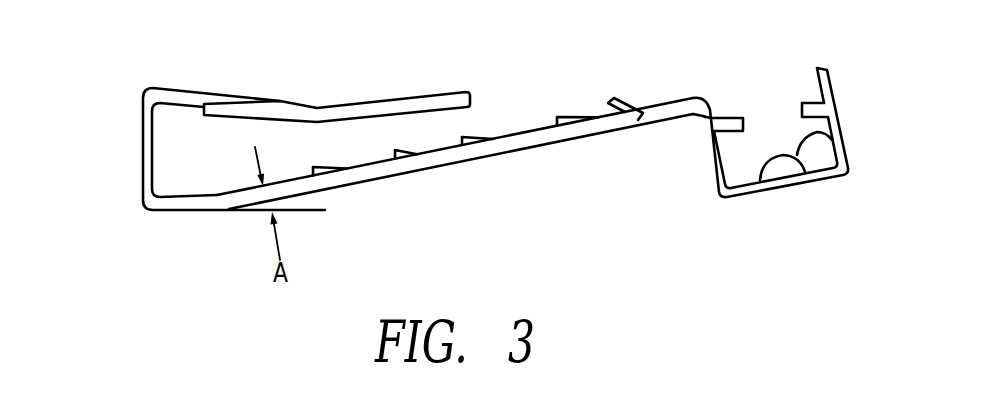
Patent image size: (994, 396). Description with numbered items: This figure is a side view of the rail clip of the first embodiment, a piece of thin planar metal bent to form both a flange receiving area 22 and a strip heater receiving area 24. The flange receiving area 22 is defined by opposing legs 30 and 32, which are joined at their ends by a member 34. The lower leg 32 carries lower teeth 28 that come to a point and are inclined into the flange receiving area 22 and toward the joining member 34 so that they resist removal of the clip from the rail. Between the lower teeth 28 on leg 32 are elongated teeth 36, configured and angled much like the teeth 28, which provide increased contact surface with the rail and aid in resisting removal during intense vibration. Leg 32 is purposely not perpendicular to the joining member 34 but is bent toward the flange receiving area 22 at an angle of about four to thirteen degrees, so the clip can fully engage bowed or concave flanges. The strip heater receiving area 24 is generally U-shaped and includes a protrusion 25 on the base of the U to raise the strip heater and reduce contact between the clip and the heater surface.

The flange receiving area 22 is at (366, 160).
The strip heater receiving area 24 is at (795, 107).
The protrusion 25 is at (805, 136).
The lower teeth 28 is at (630, 110).
The leg 30 is at (283, 101).
The leg 32 is at (442, 165).
The member 34 is at (141, 152).
The elongated teeth 36 is at (574, 117).